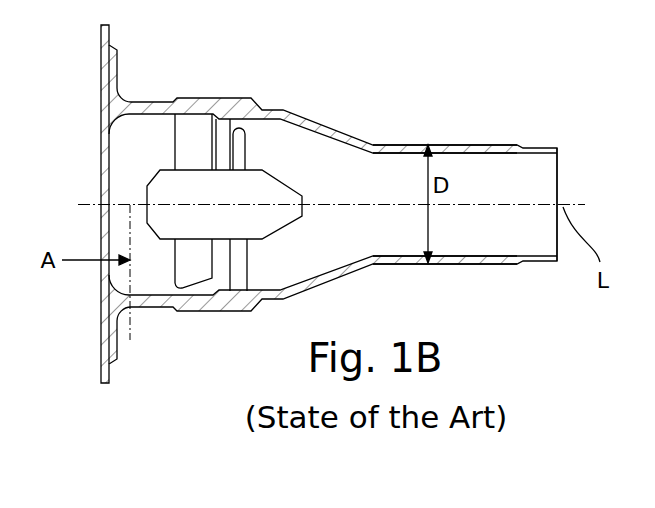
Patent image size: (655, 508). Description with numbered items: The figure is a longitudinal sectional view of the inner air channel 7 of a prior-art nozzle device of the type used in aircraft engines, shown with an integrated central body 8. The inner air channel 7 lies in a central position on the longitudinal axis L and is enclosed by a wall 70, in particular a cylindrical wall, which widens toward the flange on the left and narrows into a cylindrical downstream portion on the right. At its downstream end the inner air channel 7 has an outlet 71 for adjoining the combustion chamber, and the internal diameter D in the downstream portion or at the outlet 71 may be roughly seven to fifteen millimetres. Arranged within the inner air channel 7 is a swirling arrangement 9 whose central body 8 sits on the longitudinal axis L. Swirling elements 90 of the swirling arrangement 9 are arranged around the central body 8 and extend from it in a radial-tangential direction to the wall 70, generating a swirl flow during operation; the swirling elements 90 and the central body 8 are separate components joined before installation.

The inner air channel 7 is at (328, 128).
The wall 70 is at (357, 138).
The outlet 71 is at (559, 182).
The central body 8 is at (267, 169).
The swirling arrangement 9 is at (189, 107).
The swirling elements 90 is at (217, 122).